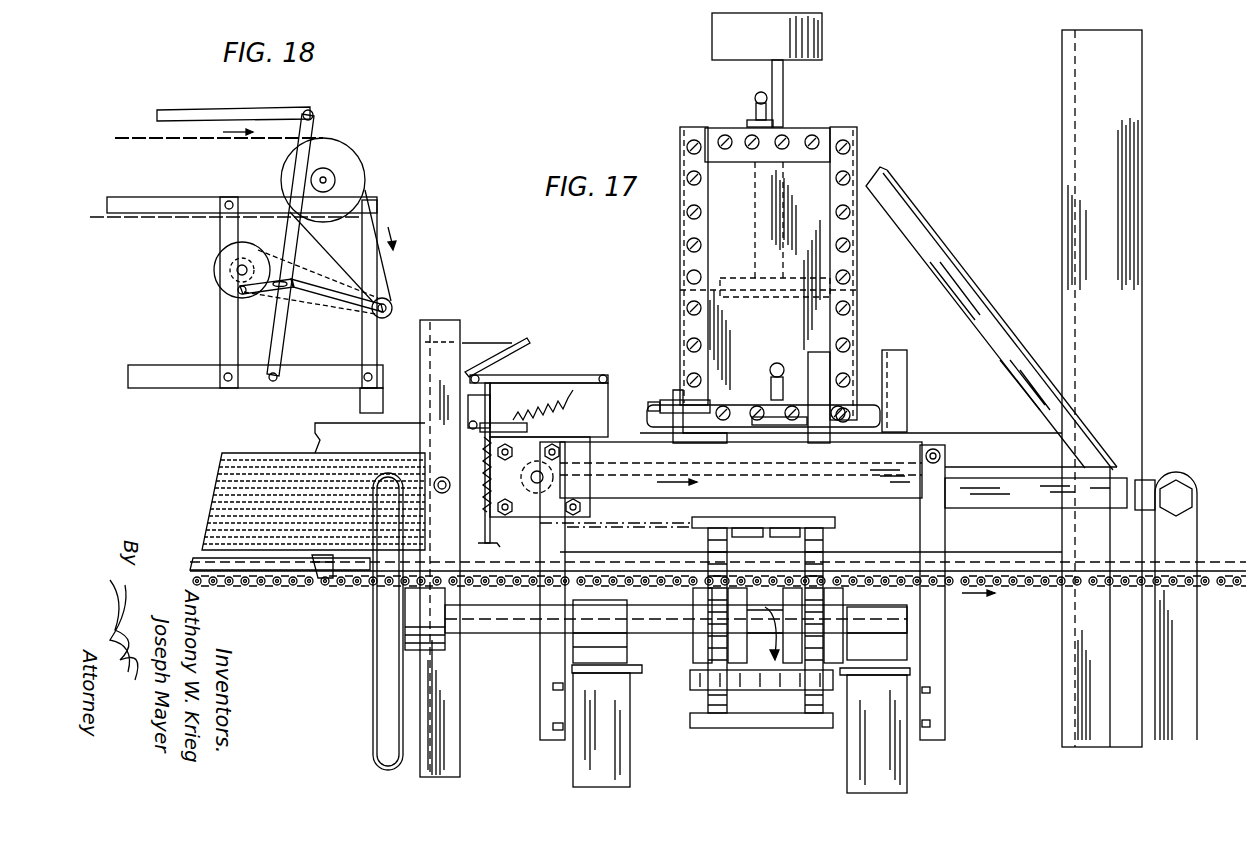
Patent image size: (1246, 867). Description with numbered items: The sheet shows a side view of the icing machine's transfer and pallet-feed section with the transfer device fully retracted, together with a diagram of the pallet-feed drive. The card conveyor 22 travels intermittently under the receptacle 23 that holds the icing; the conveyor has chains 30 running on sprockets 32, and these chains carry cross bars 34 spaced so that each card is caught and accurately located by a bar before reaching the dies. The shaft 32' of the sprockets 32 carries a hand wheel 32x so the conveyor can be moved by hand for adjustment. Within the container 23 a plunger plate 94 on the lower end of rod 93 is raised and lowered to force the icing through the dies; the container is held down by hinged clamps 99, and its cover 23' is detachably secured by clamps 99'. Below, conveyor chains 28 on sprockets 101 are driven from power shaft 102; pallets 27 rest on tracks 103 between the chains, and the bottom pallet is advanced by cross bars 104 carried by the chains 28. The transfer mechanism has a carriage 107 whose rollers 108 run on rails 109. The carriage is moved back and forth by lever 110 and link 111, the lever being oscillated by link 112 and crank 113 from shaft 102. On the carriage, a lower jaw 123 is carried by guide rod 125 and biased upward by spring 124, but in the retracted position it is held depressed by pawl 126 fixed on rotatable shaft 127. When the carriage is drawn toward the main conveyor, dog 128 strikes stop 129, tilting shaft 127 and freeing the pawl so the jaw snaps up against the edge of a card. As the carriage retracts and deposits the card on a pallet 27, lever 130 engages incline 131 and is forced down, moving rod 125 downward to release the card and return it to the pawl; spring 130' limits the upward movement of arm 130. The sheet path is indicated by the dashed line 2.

In FIG. 18, the link 111 is at (250, 111).
In FIG. 17, the link 111 is at (1048, 500).
In FIG. 18, the lever 110 is at (314, 117).
In FIG. 17, the lever 110 is at (1180, 652).
In FIG. 18, the conveyor chains 28 is at (225, 177).
In FIG. 17, the conveyor chains 28 is at (255, 586).
In FIG. 18, the sprockets 101 is at (357, 170).
In FIG. 18, the crank 113 is at (215, 273).
In FIG. 18, the link 112 is at (256, 293).
In FIG. 18, the power shaft 102 is at (392, 305).
In FIG. 17, the clamps 99' is at (787, 109).
In FIG. 17, the cover 23' is at (790, 132).
In FIG. 17, the rod 93 is at (782, 192).
In FIG. 17, the receptacle 23 is at (739, 274).
In FIG. 17, the plunger plate 94 is at (852, 296).
In FIG. 17, the clamps 99 is at (779, 378).
In FIG. 17, the stop 129 is at (658, 398).
In FIG. 17, the dog 128 is at (473, 378).
In FIG. 17, the incline 131 is at (500, 351).
In FIG. 17, the lever 130 is at (539, 356).
In FIG. 17, the spring 130' is at (549, 410).
In FIG. 17, the pawl 126 is at (482, 421).
In FIG. 17, the rotatable shaft 127 is at (470, 425).
In FIG. 17, the guide rod 125 is at (483, 531).
In FIG. 17, the lower jaw 123 is at (494, 545).
In FIG. 17, the spring 124 is at (523, 477).
In FIG. 17, the rollers 108 is at (560, 521).
In FIG. 17, the sheet path 2 is at (665, 527).
In FIG. 17, the rails 109 is at (450, 470).
In FIG. 17, the pallets 27 is at (300, 453).
In FIG. 17, the tracks 103 is at (198, 556).
In FIG. 17, the carriage 107 is at (578, 481).
In FIG. 17, the cross bars 104 is at (925, 540).
In FIG. 17, the cross bars 34 is at (790, 517).
In FIG. 17, the card conveyor 22 is at (753, 703).
In FIG. 17, the chains 30 is at (706, 698).
In FIG. 17, the sprockets 32 is at (747, 632).
In FIG. 17, the shaft 32' is at (676, 639).
In FIG. 17, the hand wheel 32x is at (382, 644).